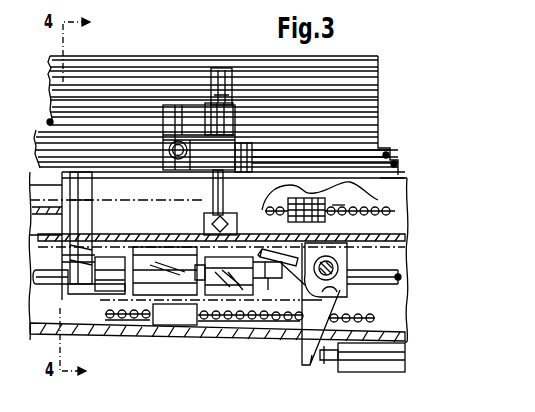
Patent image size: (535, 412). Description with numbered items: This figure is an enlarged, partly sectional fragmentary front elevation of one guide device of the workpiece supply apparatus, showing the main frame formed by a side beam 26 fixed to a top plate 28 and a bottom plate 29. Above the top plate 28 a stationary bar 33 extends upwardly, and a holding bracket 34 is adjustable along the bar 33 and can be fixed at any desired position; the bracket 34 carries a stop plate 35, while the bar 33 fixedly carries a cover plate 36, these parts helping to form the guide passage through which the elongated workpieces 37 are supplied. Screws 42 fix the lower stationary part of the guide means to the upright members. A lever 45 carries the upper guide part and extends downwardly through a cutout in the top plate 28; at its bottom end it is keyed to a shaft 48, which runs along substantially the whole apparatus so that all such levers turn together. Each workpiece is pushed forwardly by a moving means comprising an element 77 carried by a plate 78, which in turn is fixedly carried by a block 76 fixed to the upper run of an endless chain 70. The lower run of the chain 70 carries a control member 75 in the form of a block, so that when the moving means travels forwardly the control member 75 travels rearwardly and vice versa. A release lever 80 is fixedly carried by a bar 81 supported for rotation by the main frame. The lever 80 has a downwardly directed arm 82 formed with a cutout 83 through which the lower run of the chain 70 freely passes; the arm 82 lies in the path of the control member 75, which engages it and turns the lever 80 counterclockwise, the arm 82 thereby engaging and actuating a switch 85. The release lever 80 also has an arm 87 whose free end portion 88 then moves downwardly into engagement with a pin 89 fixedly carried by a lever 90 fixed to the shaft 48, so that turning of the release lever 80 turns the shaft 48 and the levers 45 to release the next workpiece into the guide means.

The side beam 26 is at (412, 298).
The top plate 28 is at (396, 240).
The bottom plate 29 is at (198, 336).
The stationary bar 33 is at (213, 190).
The holding bracket 34 is at (240, 142).
The stop plate 35 is at (170, 114).
The cover plate 36 is at (222, 70).
The workpieces 37 is at (180, 58).
The screws 42 is at (204, 226).
The lever 45 is at (95, 232).
The shaft 48 is at (38, 284).
The endless chain 70 is at (357, 216).
The control member 75 is at (176, 325).
The block 76 is at (290, 222).
The element 77 is at (345, 206).
The plate 78 is at (263, 207).
The release lever 80 is at (371, 285).
The bar 81 is at (338, 268).
The arm 82 is at (303, 348).
The cutout 83 is at (332, 293).
The switch 85 is at (358, 366).
The arm 87 is at (284, 265).
The free end portion 88 is at (283, 284).
The pin 89 is at (260, 285).
The lever 90 is at (241, 292).